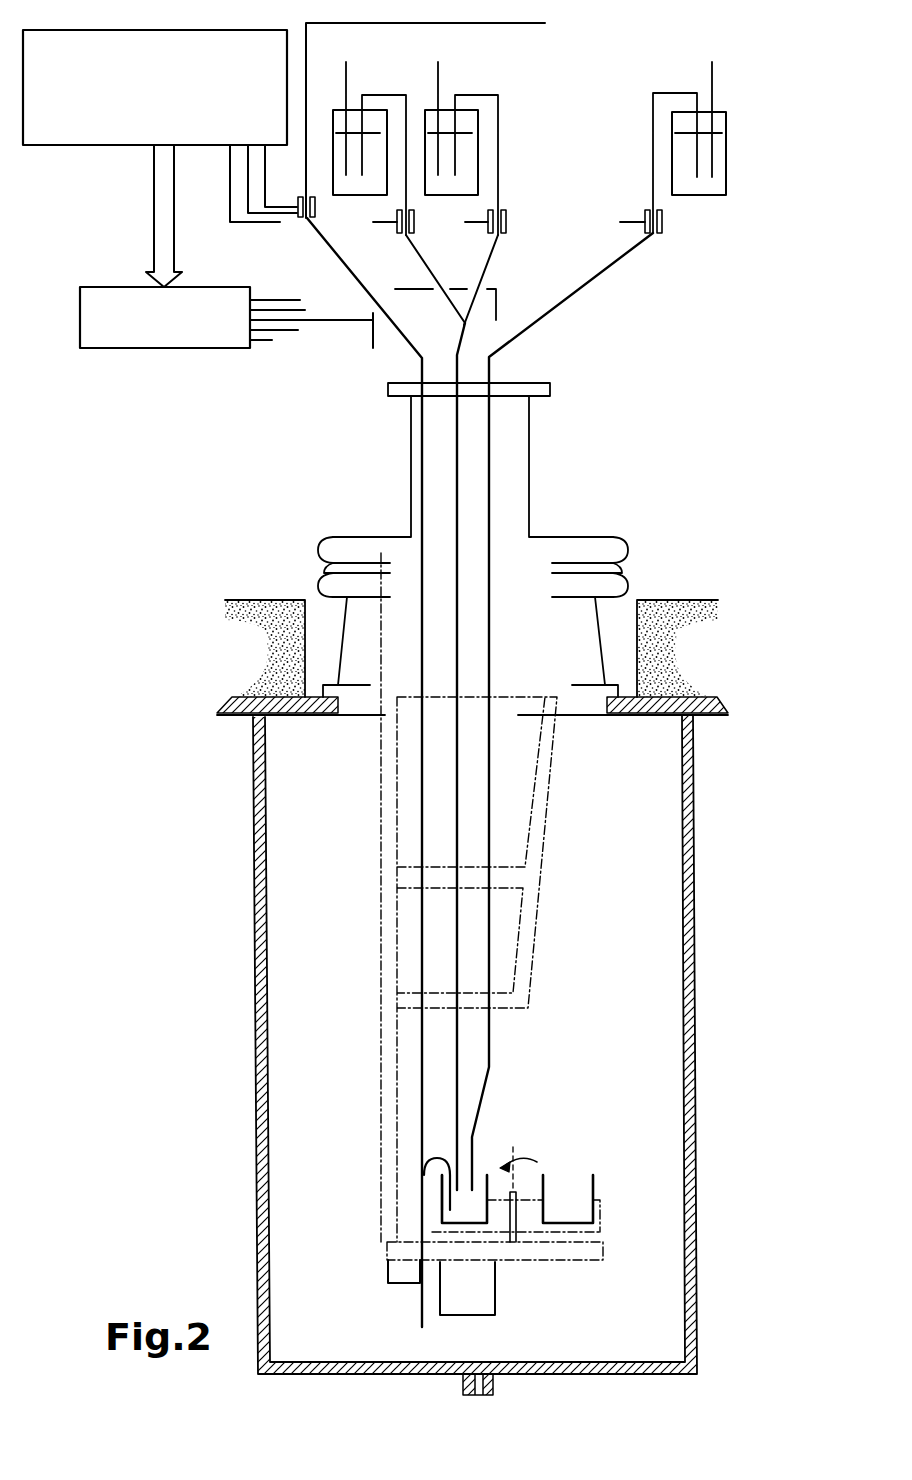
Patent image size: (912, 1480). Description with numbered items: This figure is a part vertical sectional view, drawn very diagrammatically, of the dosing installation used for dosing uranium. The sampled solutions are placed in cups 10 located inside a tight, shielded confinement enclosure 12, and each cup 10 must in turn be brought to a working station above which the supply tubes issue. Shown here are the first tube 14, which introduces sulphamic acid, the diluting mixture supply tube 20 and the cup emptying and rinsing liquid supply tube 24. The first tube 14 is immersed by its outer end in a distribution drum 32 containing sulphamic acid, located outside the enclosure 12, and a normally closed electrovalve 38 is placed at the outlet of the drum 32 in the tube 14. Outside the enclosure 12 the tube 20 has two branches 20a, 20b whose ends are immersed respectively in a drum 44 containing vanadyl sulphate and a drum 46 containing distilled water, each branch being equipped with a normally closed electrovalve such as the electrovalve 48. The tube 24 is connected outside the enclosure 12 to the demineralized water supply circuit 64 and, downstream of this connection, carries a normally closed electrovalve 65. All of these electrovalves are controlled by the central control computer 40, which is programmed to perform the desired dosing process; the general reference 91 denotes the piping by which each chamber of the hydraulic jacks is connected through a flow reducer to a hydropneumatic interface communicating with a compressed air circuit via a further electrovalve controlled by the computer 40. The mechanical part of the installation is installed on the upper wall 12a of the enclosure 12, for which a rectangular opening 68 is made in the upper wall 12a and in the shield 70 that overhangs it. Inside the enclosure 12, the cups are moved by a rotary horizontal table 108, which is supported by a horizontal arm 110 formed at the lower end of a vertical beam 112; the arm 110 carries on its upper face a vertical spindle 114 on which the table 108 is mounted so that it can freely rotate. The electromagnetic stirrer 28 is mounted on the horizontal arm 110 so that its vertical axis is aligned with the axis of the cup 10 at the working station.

The cup 10 is at (597, 1178).
The confinement enclosure 12 is at (252, 1005).
The upper wall 12a is at (238, 716).
The first tube 14 is at (628, 257).
The fourth tube 20 is at (463, 332).
The branch 20a is at (435, 288).
The branch 20b is at (487, 275).
The cup emptying and rinsing liquid supply tube 24 is at (343, 265).
The electromagnetic stirrer 28 is at (488, 1287).
The distribution drum 32 is at (720, 197).
The electrovalve 38 is at (665, 215).
The central control computer 40 is at (143, 98).
The drum 44 is at (376, 108).
The drum 46 is at (470, 108).
The electrovalve 48 is at (507, 220).
The demineralized water supply circuit 64 is at (545, 23).
The electrovalve 65 is at (298, 222).
The rectangular opening 68 is at (597, 708).
The shield 70 is at (658, 610).
The hydropneumatic interface assembly 91 is at (145, 331).
The rotary horizontal table 108 is at (600, 1217).
The horizontal arm 110 is at (593, 1262).
The vertical beam 112 is at (385, 1013).
The vertical spindle 114 is at (515, 1192).